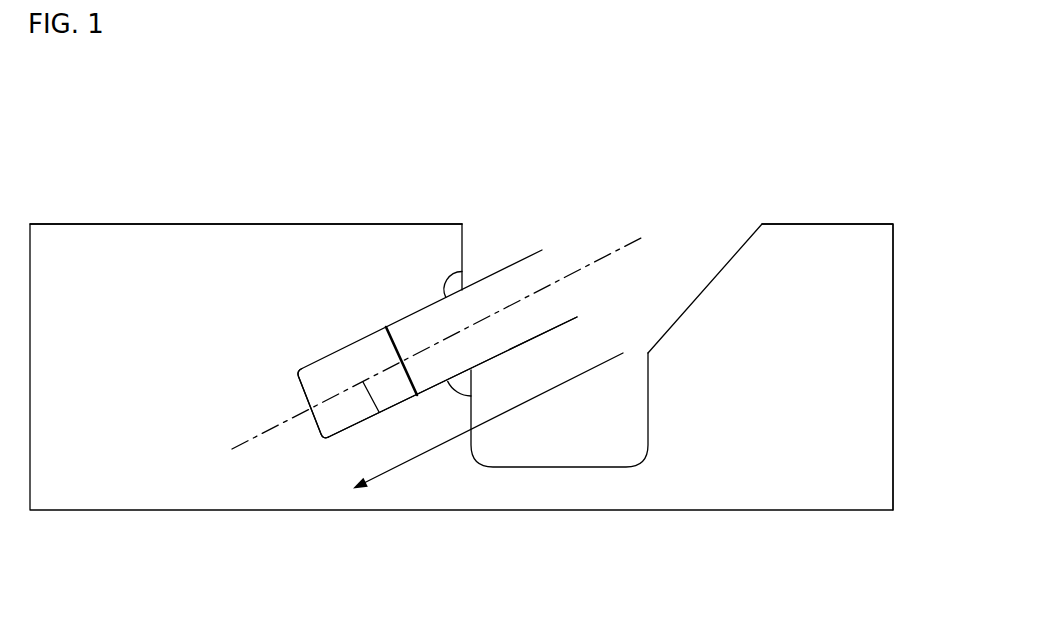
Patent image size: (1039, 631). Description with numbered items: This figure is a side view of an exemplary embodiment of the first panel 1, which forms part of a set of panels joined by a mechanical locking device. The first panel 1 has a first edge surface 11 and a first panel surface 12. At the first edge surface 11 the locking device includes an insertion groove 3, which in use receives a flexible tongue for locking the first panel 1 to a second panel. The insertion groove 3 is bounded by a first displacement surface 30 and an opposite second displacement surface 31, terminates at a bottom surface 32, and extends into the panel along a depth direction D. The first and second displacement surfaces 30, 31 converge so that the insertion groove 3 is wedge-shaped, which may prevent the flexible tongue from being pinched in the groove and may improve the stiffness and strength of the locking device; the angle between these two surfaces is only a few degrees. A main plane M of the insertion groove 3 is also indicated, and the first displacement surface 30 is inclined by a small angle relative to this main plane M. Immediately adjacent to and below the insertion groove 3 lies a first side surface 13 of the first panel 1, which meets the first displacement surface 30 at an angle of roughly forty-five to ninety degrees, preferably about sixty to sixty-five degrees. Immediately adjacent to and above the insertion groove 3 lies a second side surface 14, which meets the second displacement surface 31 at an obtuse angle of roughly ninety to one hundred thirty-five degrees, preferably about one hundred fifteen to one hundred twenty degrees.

The first panel 1 is at (196, 272).
The first panel surface 12 is at (331, 224).
The second side surface 14 is at (465, 228).
The first edge surface 11 is at (893, 236).
The first side surface 13 is at (473, 383).
The insertion groove 3 is at (335, 372).
The second displacement surface 31 is at (386, 331).
The first displacement surface 30 is at (360, 425).
The bottom surface 32 is at (315, 423).
The main plane M is at (558, 281).
The depth direction D is at (488, 421).